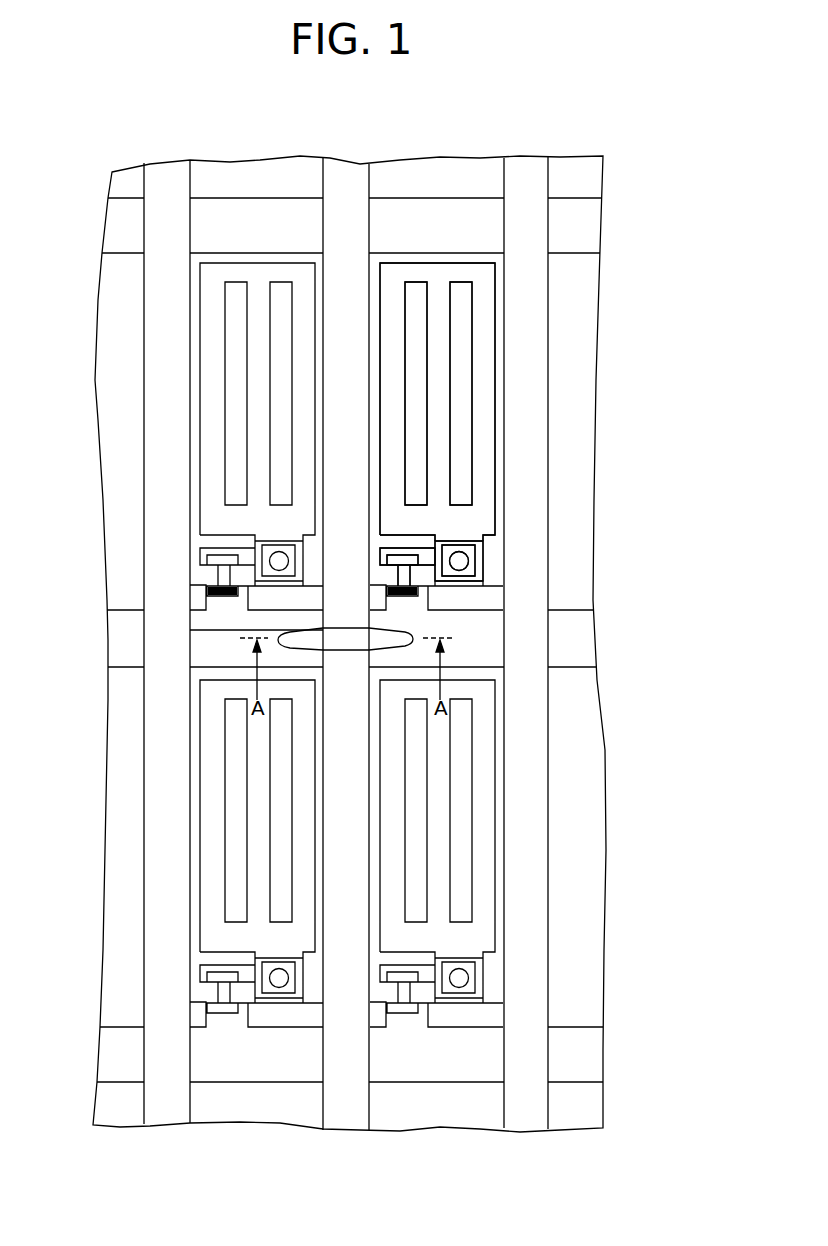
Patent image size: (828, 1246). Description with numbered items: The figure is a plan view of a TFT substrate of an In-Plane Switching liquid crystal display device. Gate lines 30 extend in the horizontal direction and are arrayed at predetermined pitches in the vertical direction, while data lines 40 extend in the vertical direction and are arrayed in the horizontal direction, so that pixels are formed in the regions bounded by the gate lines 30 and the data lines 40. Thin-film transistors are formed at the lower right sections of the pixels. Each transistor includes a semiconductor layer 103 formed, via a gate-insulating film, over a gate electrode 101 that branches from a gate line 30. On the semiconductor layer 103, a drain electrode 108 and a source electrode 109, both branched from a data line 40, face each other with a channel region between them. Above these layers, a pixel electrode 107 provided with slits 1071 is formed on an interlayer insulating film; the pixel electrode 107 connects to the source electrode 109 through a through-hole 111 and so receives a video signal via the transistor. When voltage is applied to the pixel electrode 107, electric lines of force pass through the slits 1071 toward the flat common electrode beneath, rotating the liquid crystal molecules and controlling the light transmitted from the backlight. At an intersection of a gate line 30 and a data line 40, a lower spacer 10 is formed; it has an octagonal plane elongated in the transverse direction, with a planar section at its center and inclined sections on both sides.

The lower spacer 10 is at (338, 627).
The gate line 30 is at (568, 655).
The data line 40 is at (533, 283).
The gate electrode 101 is at (402, 545).
The semiconductor layer 103 is at (415, 552).
The pixel electrode 107 is at (482, 348).
The slit 1071 is at (472, 380).
The drain electrode 108 is at (397, 578).
The source electrode 109 is at (483, 577).
The through-hole 111 is at (467, 560).